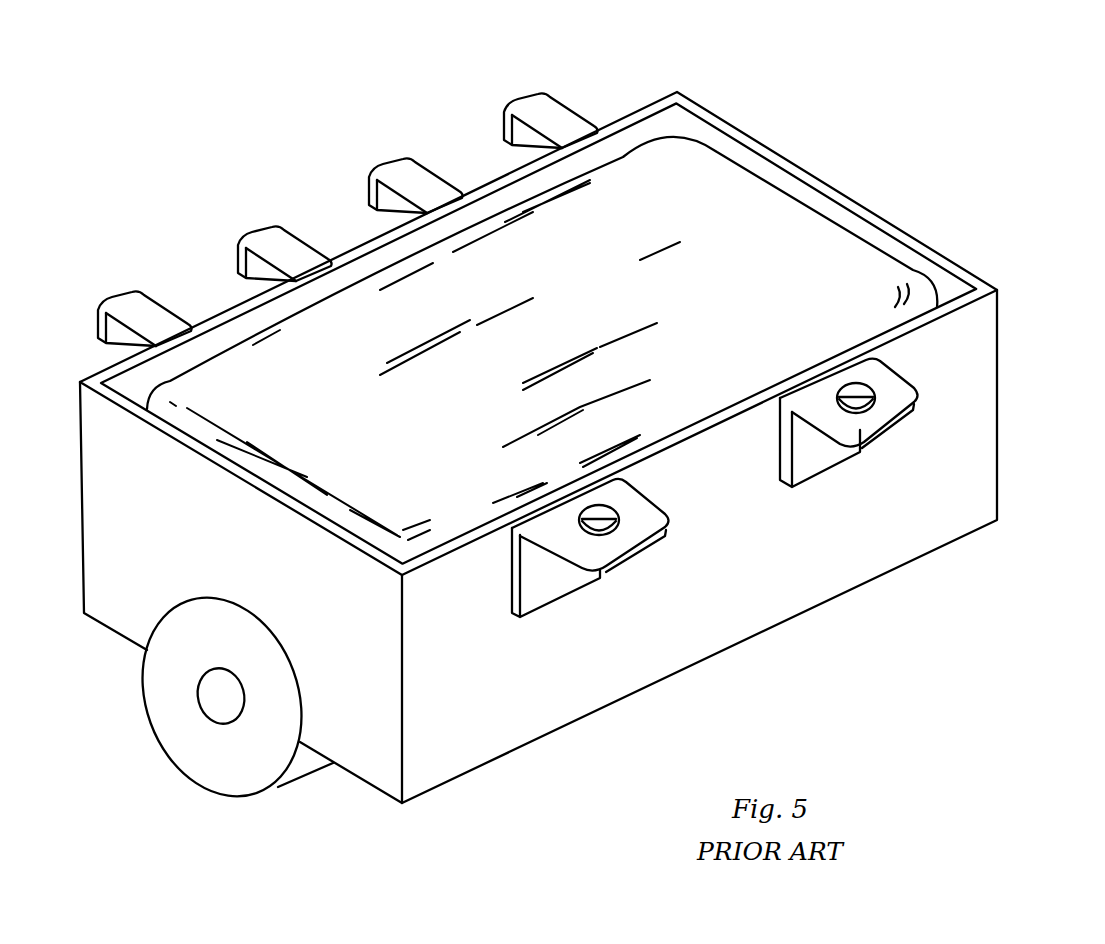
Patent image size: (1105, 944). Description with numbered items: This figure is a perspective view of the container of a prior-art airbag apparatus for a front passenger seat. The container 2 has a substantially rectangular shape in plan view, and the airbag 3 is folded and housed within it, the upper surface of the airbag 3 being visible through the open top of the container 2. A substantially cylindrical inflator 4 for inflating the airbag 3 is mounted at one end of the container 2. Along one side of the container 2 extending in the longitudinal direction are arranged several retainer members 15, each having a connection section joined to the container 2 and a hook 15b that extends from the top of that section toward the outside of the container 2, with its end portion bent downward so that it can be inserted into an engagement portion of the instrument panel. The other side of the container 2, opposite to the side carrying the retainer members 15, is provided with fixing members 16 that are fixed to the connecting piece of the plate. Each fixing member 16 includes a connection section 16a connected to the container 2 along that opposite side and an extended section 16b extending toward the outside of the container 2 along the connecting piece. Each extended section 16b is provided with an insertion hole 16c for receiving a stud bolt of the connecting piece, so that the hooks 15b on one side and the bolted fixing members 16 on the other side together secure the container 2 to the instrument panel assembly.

The container 2 is at (918, 237).
The airbag 3 is at (703, 213).
The inflator 4 is at (202, 747).
The retainer member 15 is at (140, 285).
The hook 15b is at (128, 300).
The fixing member 16 is at (789, 554).
The connection section 16a is at (810, 462).
The extended section 16b is at (905, 403).
The insertion hole 16c is at (860, 385).